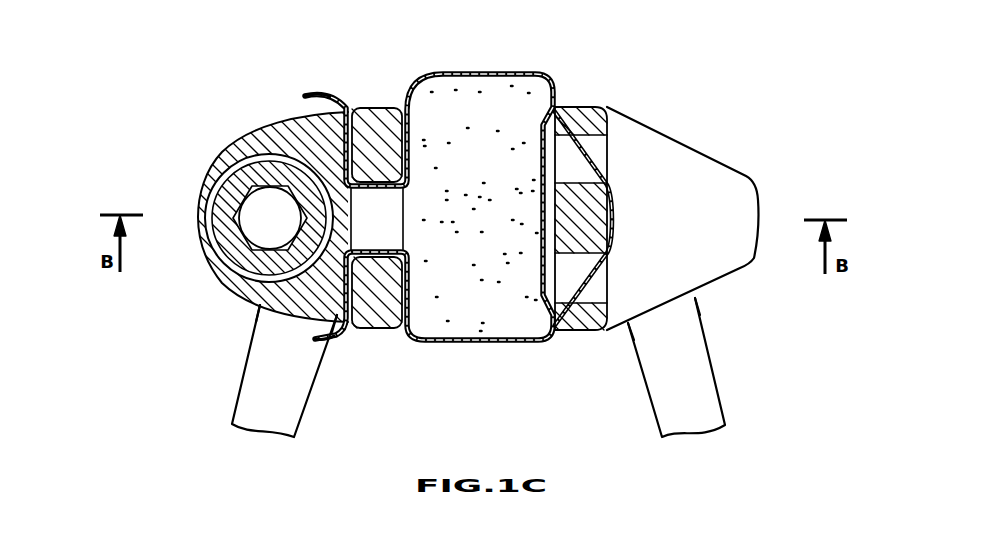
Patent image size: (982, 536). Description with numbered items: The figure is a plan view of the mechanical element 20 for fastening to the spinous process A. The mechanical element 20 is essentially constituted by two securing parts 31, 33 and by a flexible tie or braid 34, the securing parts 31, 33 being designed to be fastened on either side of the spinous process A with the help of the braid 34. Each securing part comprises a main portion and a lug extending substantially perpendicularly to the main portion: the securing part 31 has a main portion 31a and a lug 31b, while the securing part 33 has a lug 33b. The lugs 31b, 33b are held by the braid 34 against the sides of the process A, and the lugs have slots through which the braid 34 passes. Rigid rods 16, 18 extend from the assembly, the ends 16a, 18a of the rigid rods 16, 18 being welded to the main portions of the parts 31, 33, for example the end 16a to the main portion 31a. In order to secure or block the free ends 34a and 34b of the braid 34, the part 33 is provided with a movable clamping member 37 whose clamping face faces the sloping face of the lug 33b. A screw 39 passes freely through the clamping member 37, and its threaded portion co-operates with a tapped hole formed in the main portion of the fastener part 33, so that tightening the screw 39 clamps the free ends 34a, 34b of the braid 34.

The mechanical element 20 is at (673, 74).
The clamping member 37 is at (241, 142).
The screw 39 is at (212, 210).
The lug 33b is at (385, 118).
The securing part 33 is at (367, 334).
The spinous process A is at (480, 97).
The braid 34 is at (584, 156).
The free end of the braid 34a is at (306, 96).
The free end of the braid 34b is at (313, 339).
The lug 31b is at (575, 115).
The securing part 31 is at (717, 153).
The main portion 31a is at (742, 204).
The rigid rod 16 is at (686, 381).
The end of the rigid rod 16a is at (666, 314).
The rigid rod 18 is at (247, 408).
The end of the rigid rod 18a is at (288, 322).